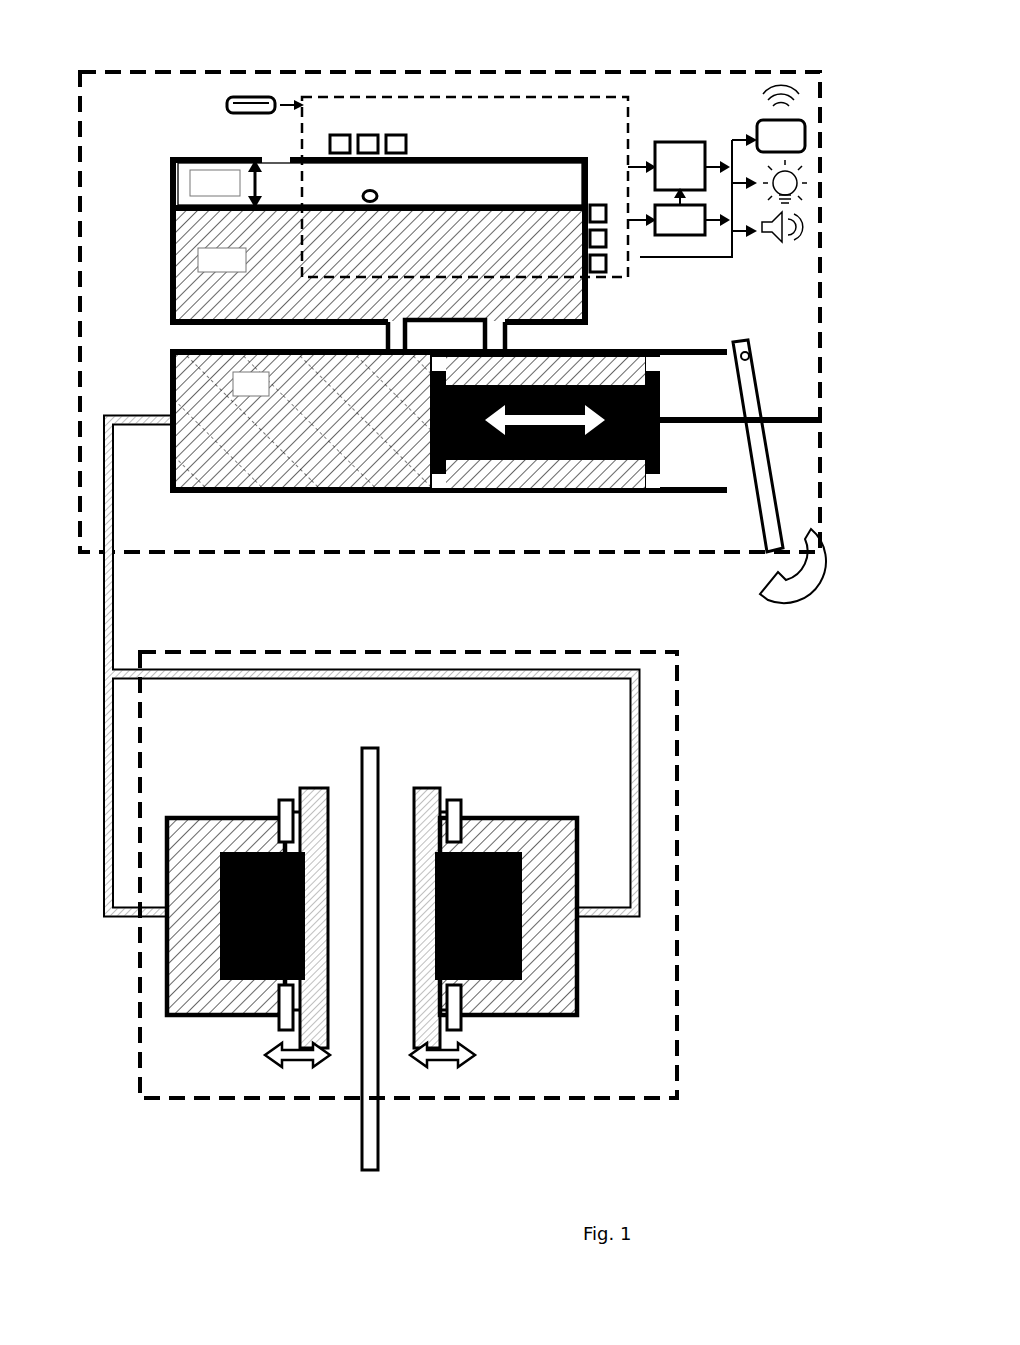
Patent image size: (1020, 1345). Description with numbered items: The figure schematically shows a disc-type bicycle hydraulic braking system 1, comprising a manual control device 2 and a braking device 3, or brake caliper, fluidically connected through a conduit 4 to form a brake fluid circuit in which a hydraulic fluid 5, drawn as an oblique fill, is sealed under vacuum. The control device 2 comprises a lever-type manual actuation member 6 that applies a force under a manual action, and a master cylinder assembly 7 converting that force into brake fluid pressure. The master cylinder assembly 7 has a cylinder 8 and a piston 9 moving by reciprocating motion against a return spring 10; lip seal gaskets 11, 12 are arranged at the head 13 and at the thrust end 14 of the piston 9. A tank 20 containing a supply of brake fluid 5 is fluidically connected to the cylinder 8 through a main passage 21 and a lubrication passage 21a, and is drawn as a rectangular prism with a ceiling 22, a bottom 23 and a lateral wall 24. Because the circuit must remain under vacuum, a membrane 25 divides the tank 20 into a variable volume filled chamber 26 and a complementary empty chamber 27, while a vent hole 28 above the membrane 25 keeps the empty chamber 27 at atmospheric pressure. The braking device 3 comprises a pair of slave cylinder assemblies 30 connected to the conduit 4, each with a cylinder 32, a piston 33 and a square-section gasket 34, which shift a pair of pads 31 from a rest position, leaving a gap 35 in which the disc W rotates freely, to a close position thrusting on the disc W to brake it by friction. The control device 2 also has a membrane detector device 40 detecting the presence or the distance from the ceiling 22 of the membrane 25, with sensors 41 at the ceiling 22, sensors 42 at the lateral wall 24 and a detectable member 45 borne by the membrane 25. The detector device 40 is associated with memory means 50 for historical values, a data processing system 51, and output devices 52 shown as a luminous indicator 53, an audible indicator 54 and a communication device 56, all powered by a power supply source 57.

The bicycle hydraulic braking system 1 is at (462, 619).
The manual control device 2 is at (527, 70).
The braking device 3 is at (409, 942).
The conduit 4 is at (112, 618).
The hydraulic fluid 5 is at (257, 393).
The manual actuation member 6 is at (770, 465).
The master cylinder assembly 7 is at (158, 268).
The cylinder 8 is at (330, 492).
The piston 9 is at (558, 483).
The return spring 10 is at (235, 420).
The gasket 11 is at (445, 492).
The gasket 12 is at (652, 490).
The head 13 is at (408, 430).
The thrust end 14 is at (686, 440).
The tank 20 is at (457, 323).
The main passage 21 is at (386, 338).
The lubrication passage 21a is at (508, 347).
The ceiling 22 is at (476, 172).
The bottom 23 is at (185, 318).
The lateral wall 24 is at (570, 180).
The membrane 25 is at (172, 195).
The filled chamber 26 is at (238, 269).
The empty chamber 27 is at (232, 192).
The vent hole 28 is at (282, 156).
The slave cylinder assembly 30 is at (316, 1010).
The friction element 31 is at (312, 1022).
The cylinder 32 is at (188, 1012).
The piston 33 is at (220, 950).
The gasket 34 is at (280, 1023).
The gap 35 is at (340, 1070).
The membrane detector device 40 is at (450, 165).
The sensors 41 is at (360, 130).
The sensors 42 is at (625, 262).
The detectable member 45 is at (380, 197).
The memory means 50 is at (695, 235).
The data processing system 51 is at (672, 142).
The output devices 52 is at (748, 208).
The luminous indicator 53 is at (805, 196).
The audible indicator 54 is at (805, 231).
The communication device 56 is at (805, 132).
The power supply source 57 is at (245, 97).
The disc W is at (380, 1155).